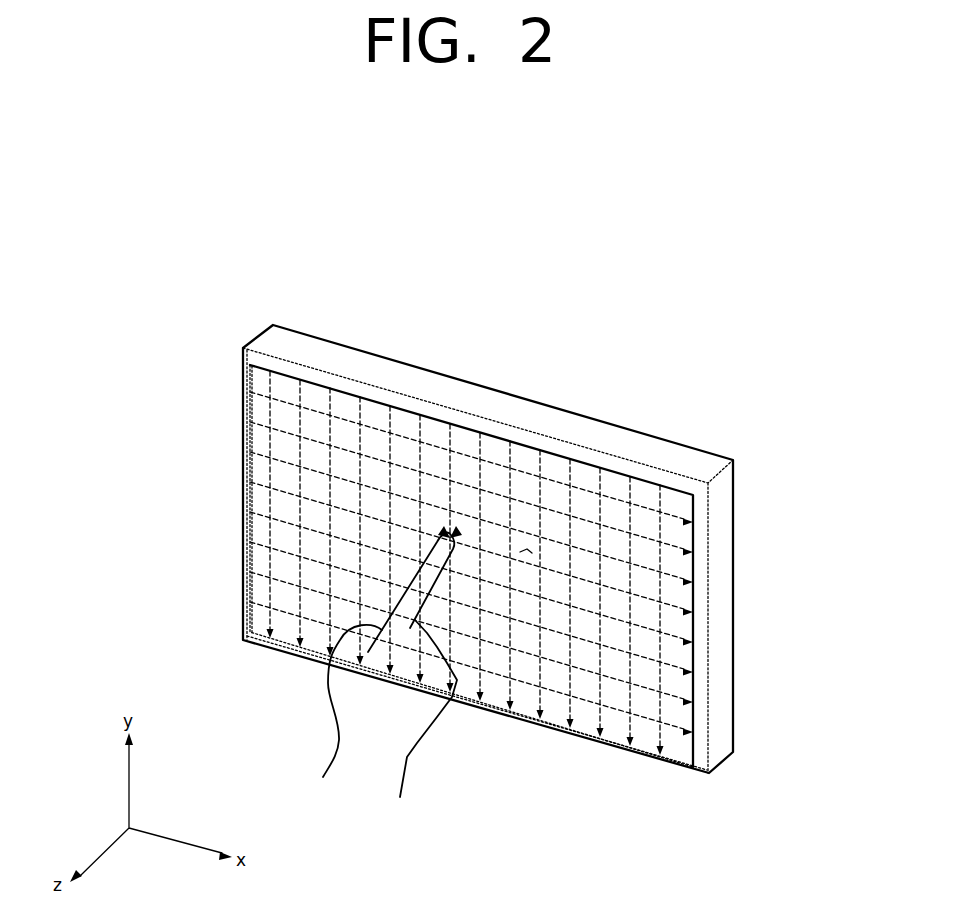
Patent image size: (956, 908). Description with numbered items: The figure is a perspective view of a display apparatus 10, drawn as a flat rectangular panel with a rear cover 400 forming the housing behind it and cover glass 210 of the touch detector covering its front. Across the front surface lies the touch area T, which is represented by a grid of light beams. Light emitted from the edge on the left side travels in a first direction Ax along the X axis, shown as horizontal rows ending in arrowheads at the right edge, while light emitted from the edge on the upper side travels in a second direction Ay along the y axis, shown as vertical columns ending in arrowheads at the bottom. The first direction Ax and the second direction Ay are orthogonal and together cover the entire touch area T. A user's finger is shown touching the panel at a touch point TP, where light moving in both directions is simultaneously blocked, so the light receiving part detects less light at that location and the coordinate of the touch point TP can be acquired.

The display apparatus 10 is at (499, 263).
The rear cover 400 is at (661, 424).
The cover glass 210 is at (647, 593).
The first direction Ax is at (315, 469).
The second direction Ay is at (482, 467).
The touch point TP is at (455, 540).
The touch area T is at (527, 553).